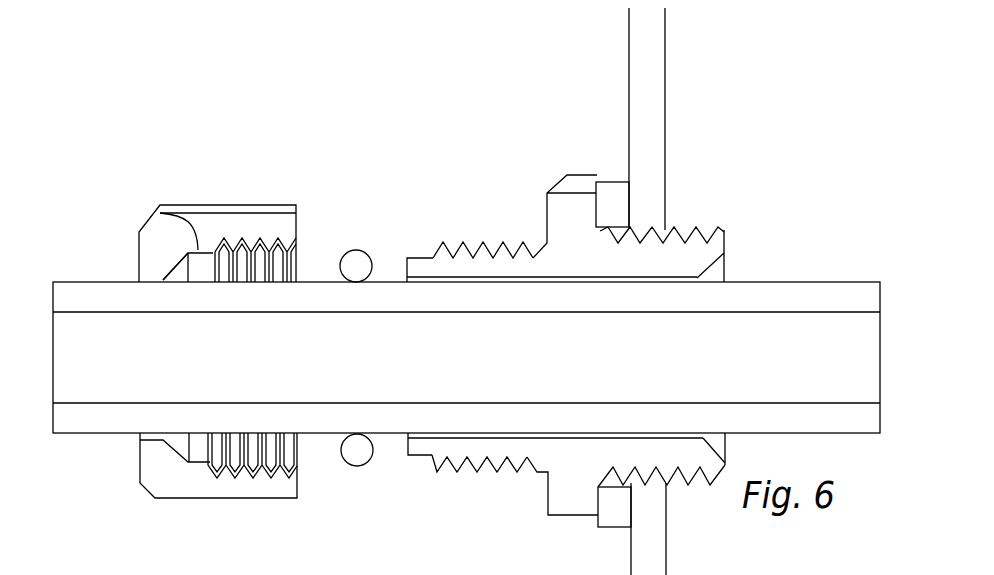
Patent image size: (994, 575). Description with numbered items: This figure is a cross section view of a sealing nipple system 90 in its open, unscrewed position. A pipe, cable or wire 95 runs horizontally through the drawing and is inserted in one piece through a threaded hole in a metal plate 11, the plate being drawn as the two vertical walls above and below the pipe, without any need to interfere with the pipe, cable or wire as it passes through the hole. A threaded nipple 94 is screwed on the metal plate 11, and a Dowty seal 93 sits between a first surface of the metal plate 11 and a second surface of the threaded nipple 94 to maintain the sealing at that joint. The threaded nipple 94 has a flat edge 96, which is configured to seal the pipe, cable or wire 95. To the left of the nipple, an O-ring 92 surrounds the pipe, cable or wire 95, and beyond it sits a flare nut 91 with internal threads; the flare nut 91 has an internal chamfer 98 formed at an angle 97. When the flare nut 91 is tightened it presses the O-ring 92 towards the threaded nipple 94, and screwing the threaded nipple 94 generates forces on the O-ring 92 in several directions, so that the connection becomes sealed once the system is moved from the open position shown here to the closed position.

The sealing nipple system 90 is at (496, 117).
The flare nut 91 is at (237, 205).
The O-ring 92 is at (360, 249).
The Dowty seal 93 is at (612, 182).
The threaded nipple 94 is at (687, 230).
The pipe, cable or wire 95 is at (782, 282).
The flat edge 96 is at (404, 270).
The angle 97 is at (173, 258).
The internal chamfer 98 is at (173, 210).
The metal plate 11 is at (690, 574).